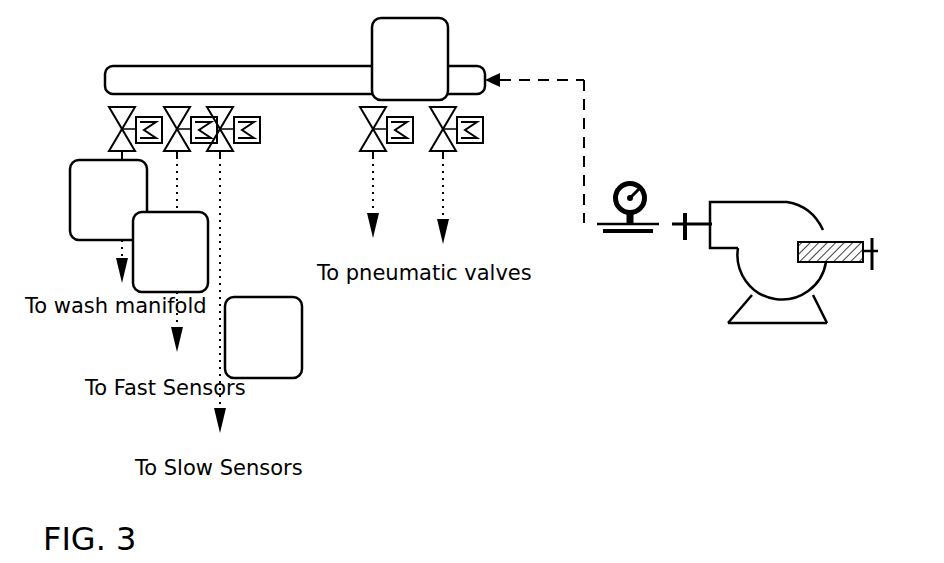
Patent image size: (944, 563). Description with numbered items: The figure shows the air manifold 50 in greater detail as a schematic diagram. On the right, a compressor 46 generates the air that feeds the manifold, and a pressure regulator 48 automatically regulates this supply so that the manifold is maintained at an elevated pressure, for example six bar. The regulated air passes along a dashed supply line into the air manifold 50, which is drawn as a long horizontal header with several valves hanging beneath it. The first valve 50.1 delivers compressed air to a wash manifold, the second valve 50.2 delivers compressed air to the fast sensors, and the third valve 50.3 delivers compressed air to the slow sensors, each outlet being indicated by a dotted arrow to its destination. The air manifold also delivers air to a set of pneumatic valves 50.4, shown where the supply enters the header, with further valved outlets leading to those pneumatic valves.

The air manifold 50 is at (295, 67).
The first valve 50.1 is at (108, 200).
The second valve 50.2 is at (170, 252).
The third valve 50.3 is at (263, 337).
The set of pneumatic valves 50.4 is at (410, 59).
The pressure regulator 48 is at (701, 148).
The compressor 46 is at (797, 261).